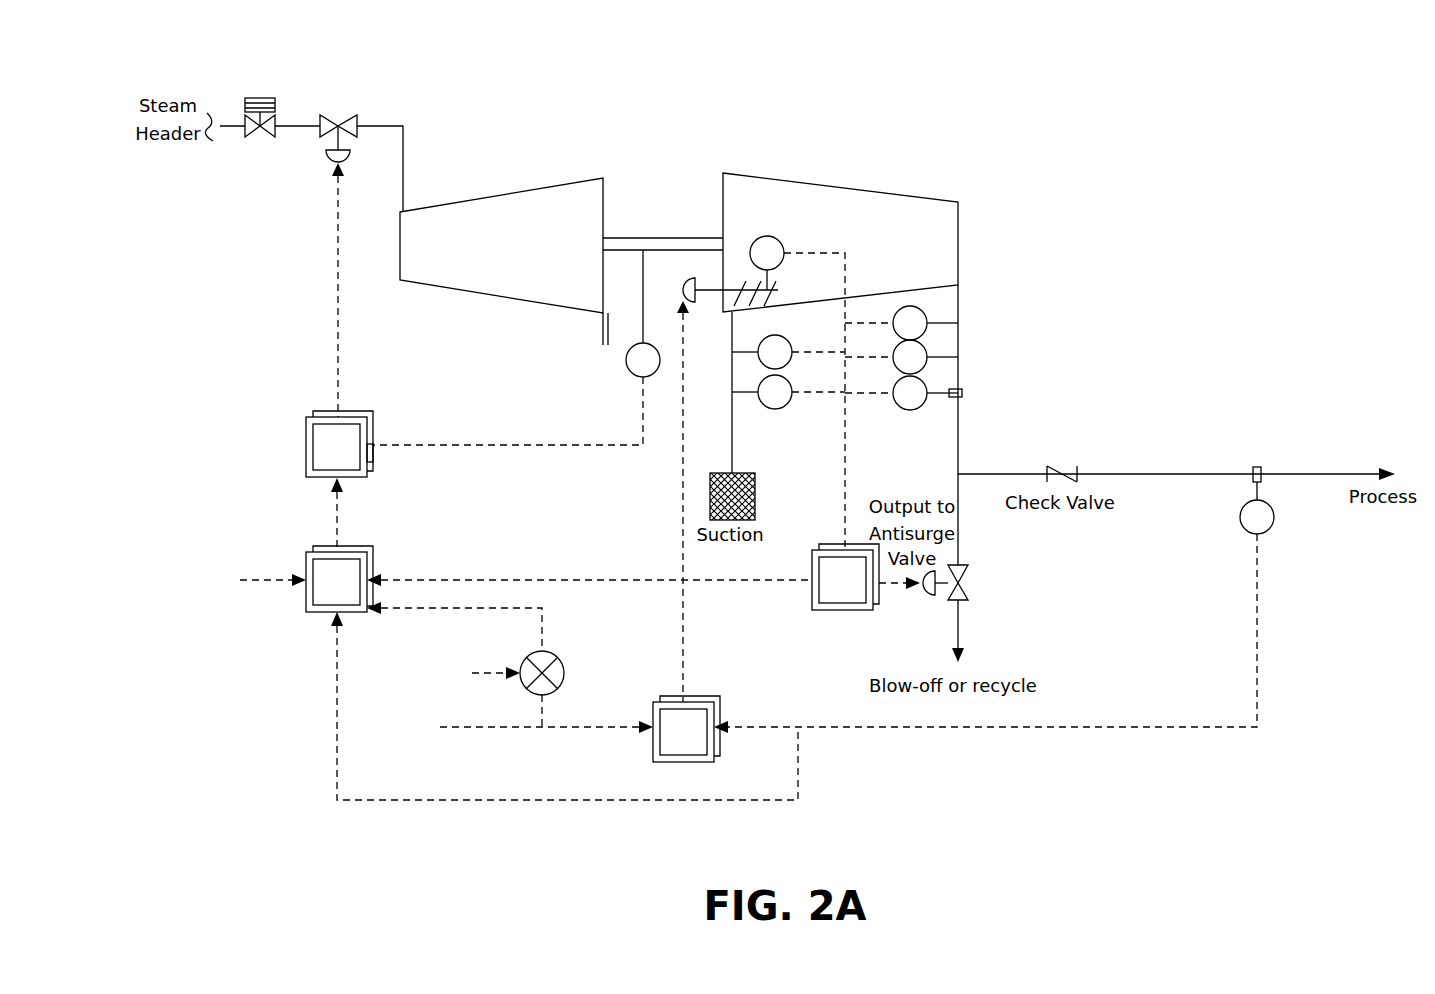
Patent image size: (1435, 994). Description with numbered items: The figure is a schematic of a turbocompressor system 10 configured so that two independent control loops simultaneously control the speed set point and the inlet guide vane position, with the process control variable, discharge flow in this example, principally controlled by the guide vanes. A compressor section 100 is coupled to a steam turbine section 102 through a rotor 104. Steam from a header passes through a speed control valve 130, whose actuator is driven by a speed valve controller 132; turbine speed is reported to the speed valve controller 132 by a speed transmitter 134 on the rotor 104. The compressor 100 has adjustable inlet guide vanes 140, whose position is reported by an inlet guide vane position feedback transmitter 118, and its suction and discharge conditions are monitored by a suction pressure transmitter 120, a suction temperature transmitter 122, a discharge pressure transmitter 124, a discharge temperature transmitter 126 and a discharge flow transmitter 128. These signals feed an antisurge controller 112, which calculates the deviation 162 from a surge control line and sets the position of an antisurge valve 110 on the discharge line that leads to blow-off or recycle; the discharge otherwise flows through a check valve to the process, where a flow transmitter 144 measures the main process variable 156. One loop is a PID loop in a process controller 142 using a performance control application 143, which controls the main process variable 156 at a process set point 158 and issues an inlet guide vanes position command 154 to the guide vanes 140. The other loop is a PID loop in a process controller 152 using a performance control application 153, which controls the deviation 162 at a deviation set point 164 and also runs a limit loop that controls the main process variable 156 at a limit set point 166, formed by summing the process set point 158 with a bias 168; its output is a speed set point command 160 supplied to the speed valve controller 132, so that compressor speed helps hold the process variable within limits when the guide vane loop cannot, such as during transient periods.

The turbocompressor system 10 is at (1080, 91).
The compressor section 100 is at (874, 261).
The steam turbine section 102 is at (483, 267).
The rotor 104 is at (617, 237).
The antisurge valve 110 is at (963, 580).
The antisurge controller 112 is at (832, 548).
The inlet guide vane position feedback transmitter 118 is at (758, 238).
The suction pressure transmitter 120 is at (780, 337).
The suction temperature transmitter 122 is at (778, 411).
The discharge pressure transmitter 124 is at (900, 310).
The discharge temperature transmitter 126 is at (897, 350).
The flow transmitter 128 is at (905, 410).
The speed control valve 130 is at (333, 114).
The speed valve controller 132 is at (303, 437).
The speed transmitter 134 is at (627, 365).
The inlet guide vanes 140 is at (708, 288).
The process controller 142 is at (708, 698).
The performance control application 143 is at (720, 706).
The flow transmitter 144 is at (1268, 529).
The process controller 152 is at (315, 614).
The performance control application 153 is at (306, 595).
The inlet guide vanes position command 154 is at (680, 483).
The main process variable 156 is at (1178, 730).
The process set point 158 is at (470, 730).
The speed set point command 160 is at (340, 513).
The deviation 162 is at (582, 578).
The deviation set point 164 is at (209, 598).
The limit set point 166 is at (545, 620).
The bias 168 is at (479, 676).